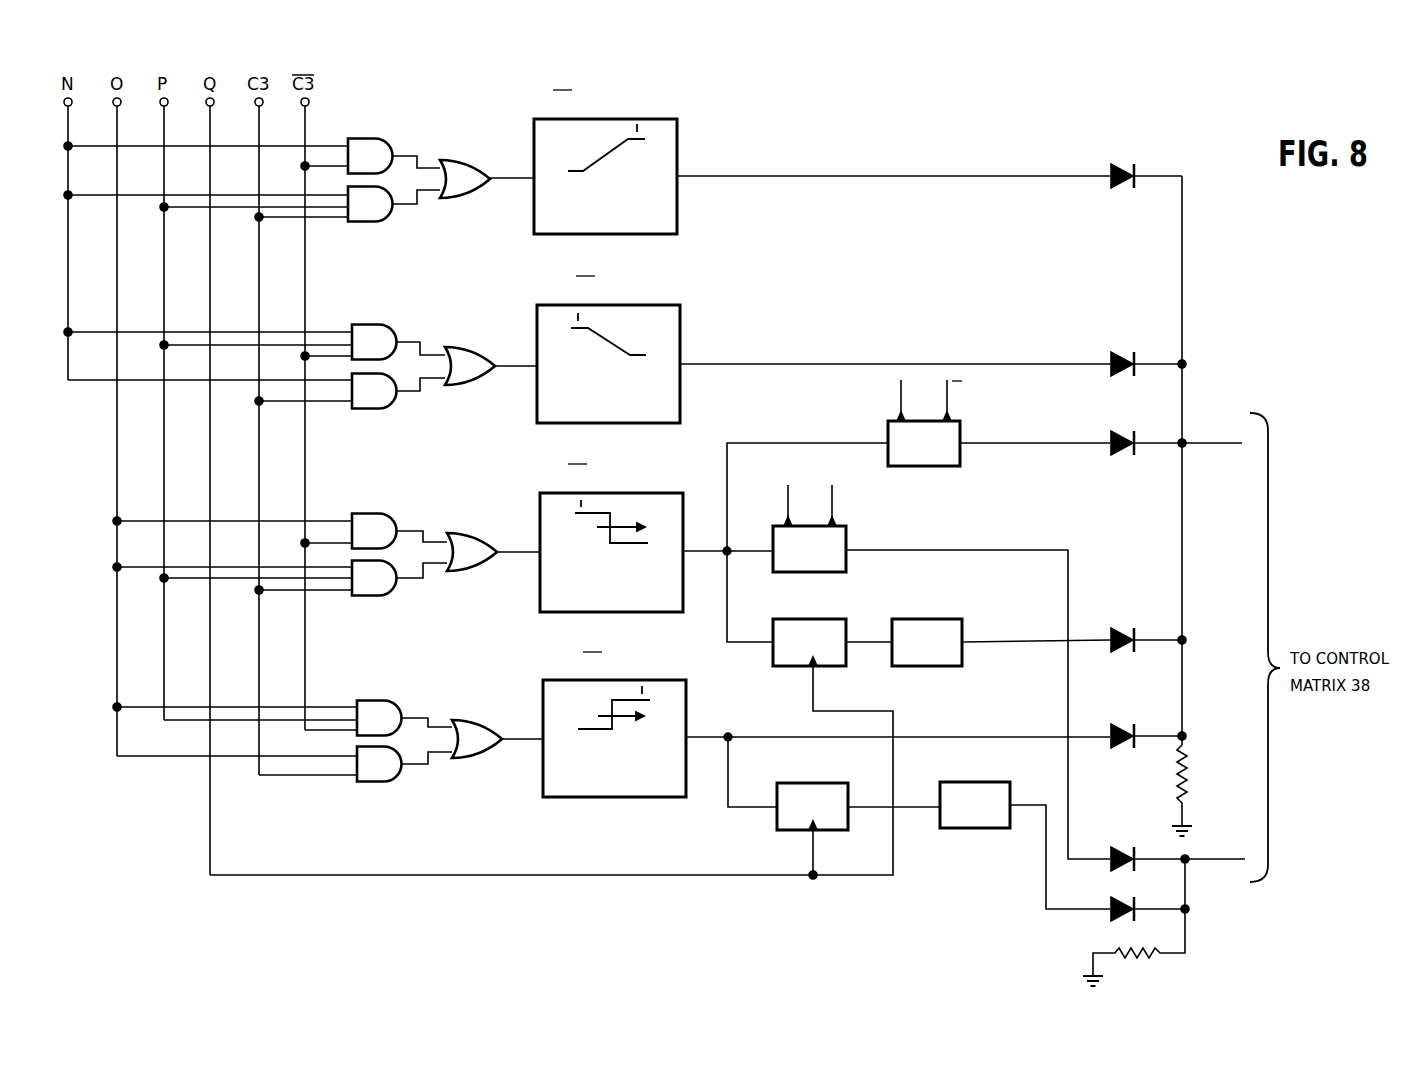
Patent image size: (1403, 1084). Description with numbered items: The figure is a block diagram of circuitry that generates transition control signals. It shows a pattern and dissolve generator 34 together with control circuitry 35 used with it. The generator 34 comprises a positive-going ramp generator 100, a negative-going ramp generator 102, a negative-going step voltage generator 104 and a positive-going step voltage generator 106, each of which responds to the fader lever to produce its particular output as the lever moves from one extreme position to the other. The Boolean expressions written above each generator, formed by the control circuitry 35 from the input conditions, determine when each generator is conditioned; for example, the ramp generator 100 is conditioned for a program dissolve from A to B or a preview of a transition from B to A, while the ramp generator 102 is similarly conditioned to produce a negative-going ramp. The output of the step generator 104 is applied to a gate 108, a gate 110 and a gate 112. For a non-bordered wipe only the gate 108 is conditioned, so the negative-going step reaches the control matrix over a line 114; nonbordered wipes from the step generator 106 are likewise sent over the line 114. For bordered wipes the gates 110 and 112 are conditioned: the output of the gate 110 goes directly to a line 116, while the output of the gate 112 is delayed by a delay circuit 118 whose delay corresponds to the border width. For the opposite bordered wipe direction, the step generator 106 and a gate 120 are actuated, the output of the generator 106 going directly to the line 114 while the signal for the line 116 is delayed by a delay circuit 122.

The pattern and dissolve generator 34 is at (736, 100).
The control circuitry 35 is at (381, 112).
The positive-going ramp generator 100 is at (667, 158).
The negative-going ramp generator 102 is at (663, 340).
The negative-going step voltage generator 104 is at (670, 518).
The positive-going step voltage generator 106 is at (667, 714).
The gate 108 is at (924, 456).
The gate 110 is at (838, 540).
The gate 112 is at (832, 625).
The line 114 is at (1204, 446).
The line 116 is at (1220, 858).
The delay circuit 118 is at (935, 655).
The gate 120 is at (832, 785).
The delay circuit 122 is at (972, 820).